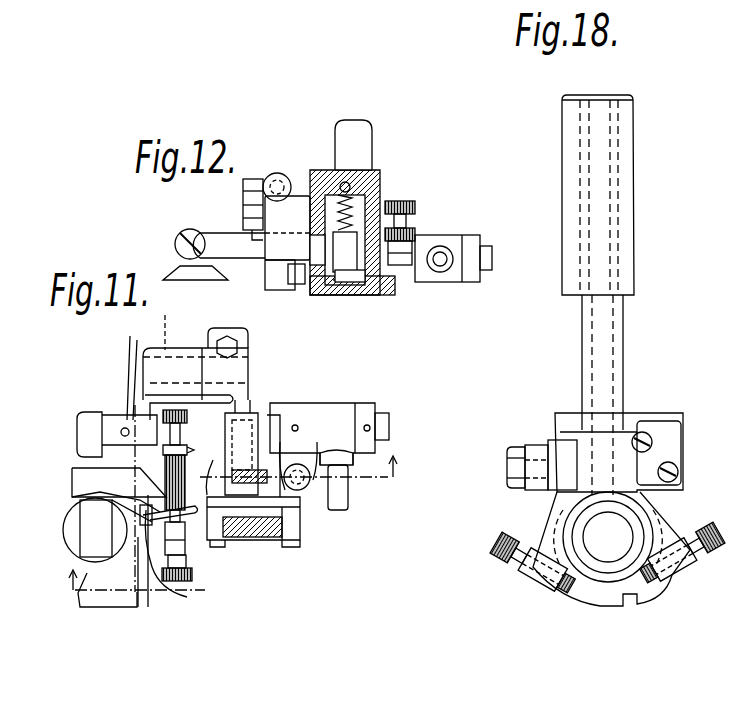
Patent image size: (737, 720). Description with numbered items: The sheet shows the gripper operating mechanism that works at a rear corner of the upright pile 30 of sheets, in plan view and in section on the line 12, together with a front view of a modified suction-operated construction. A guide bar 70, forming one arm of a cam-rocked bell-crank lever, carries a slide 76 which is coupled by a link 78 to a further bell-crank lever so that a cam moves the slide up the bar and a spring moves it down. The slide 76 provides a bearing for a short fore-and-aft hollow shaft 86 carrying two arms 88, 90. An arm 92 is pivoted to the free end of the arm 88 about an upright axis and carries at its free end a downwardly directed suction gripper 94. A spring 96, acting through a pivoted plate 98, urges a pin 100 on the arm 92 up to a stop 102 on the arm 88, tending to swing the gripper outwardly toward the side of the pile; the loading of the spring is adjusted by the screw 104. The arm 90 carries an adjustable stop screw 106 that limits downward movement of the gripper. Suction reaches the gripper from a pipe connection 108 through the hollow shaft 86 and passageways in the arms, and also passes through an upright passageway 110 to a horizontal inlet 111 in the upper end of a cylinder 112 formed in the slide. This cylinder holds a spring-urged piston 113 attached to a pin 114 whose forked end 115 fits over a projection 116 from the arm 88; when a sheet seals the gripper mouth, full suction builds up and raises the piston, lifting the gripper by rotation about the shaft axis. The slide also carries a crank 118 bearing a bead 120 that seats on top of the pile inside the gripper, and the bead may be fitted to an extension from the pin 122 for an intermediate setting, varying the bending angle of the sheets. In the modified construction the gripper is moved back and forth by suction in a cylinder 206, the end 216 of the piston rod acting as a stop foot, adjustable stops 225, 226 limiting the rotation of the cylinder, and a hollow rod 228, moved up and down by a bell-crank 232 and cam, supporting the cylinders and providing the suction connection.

In FIG. 11, the section line 12 is at (239, 507).
In FIG. 11, the pile 30 is at (105, 575).
In FIG. 11, the guide bar 70 is at (258, 540).
In FIG. 11, the slide 76 is at (288, 535).
In FIG. 11, the link 78 is at (258, 478).
In FIG. 12, the hollow shaft 86 is at (492, 252).
In FIG. 11, the hollow shaft 86 is at (389, 422).
In FIG. 12, the arm 88 is at (298, 206).
In FIG. 11, the arm 88 is at (160, 467).
In FIG. 12, the arm 90 is at (430, 258).
In FIG. 11, the arm 90 is at (305, 415).
In FIG. 12, the arm 92 is at (234, 259).
In FIG. 11, the arm 92 is at (80, 498).
In FIG. 12, the suction gripper 94 is at (172, 268).
In FIG. 11, the suction gripper 94 is at (75, 533).
In FIG. 11, the spring 96 is at (125, 482).
In FIG. 11, the pivoted plate 98 is at (170, 515).
In FIG. 12, the pin 100 is at (265, 195).
In FIG. 11, the pin 100 is at (150, 570).
In FIG. 11, the stop 102 is at (153, 517).
In FIG. 12, the screw 104 is at (277, 173).
In FIG. 11, the screw 104 is at (196, 578).
In FIG. 12, the adjustable stop screw 106 is at (414, 208).
In FIG. 11, the adjustable stop screw 106 is at (305, 487).
In FIG. 11, the pipe connection 108 is at (345, 490).
In FIG. 11, the upright passageway 110 is at (255, 470).
In FIG. 12, the horizontal inlet 111 is at (360, 172).
In FIG. 12, the cylinder 112 is at (365, 200).
In FIG. 12, the piston 113 is at (357, 245).
In FIG. 12, the pin 114 is at (344, 292).
In FIG. 12, the forked end 115 is at (298, 286).
In FIG. 12, the projection 116 is at (285, 282).
In FIG. 11, the crank 118 is at (146, 395).
In FIG. 11, the bead 120 is at (90, 425).
In FIG. 11, the pin 122 is at (195, 355).
In FIG. 18, the cylinder 206 is at (645, 512).
In FIG. 18, the end of the piston rod 216 is at (580, 522).
In FIG. 18, the adjustable stop 225 is at (560, 587).
In FIG. 18, the adjustable stop 226 is at (663, 585).
In FIG. 18, the hollow rod 228 is at (612, 360).
In FIG. 18, the bell-crank 232 is at (538, 447).